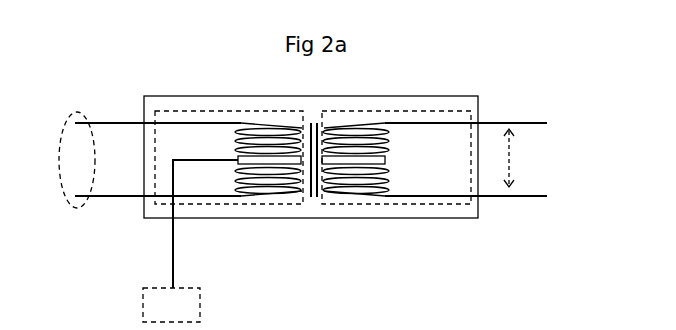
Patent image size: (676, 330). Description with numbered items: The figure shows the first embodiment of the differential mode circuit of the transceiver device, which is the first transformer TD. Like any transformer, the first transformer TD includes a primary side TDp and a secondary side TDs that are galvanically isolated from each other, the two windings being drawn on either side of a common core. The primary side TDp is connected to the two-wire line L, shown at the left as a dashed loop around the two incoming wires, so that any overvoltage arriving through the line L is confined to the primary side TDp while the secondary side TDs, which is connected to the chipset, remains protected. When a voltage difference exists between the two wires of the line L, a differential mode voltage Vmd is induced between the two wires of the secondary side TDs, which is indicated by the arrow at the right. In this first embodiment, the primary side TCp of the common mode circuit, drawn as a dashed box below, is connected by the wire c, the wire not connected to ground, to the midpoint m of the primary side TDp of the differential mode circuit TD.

The first transformer TD is at (448, 218).
The primary side TDp is at (198, 204).
The secondary side TDs is at (358, 204).
The 2-wire line L is at (77, 160).
The midpoint m is at (238, 159).
The wire c is at (173, 240).
The primary side of the common mode circuit TCp is at (171, 305).
The differential mode voltage Vmd is at (512, 158).